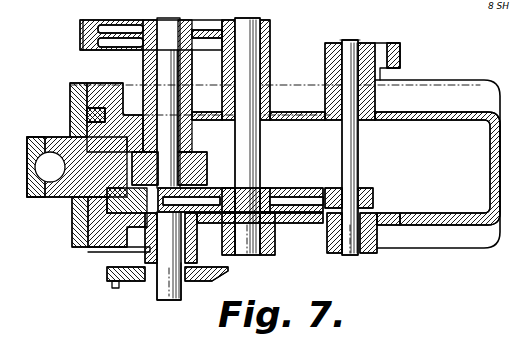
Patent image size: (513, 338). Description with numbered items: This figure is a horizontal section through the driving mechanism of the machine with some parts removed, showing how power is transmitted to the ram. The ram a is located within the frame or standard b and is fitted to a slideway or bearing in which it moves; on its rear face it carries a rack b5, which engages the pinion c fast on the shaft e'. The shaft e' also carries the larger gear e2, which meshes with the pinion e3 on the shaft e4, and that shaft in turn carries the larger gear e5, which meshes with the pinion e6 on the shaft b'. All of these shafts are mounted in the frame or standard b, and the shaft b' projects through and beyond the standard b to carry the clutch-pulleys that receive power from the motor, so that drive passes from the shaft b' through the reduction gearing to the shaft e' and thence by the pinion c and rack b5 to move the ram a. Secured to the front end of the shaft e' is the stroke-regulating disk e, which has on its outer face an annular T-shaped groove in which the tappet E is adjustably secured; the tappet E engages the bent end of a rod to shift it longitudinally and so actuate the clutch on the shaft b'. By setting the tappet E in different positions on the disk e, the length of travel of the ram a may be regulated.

The ram a is at (68, 198).
The standard b is at (437, 164).
The shaft b' is at (362, 147).
The rack b5 is at (70, 137).
The pinion c is at (172, 157).
The stroke-regulating disk e is at (167, 159).
The shaft e' is at (166, 292).
The larger gear e2 is at (80, 46).
The pinion e3 is at (257, 69).
The shaft e4 is at (270, 152).
The larger gear e5 is at (300, 193).
The pinion e6 is at (374, 191).
The tappet E is at (113, 288).